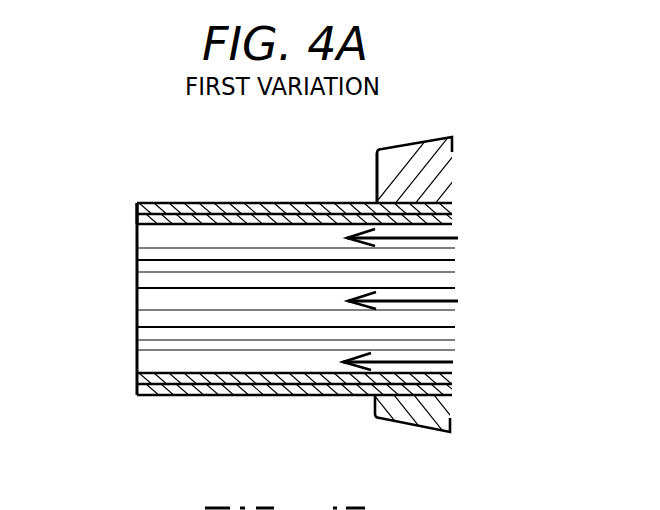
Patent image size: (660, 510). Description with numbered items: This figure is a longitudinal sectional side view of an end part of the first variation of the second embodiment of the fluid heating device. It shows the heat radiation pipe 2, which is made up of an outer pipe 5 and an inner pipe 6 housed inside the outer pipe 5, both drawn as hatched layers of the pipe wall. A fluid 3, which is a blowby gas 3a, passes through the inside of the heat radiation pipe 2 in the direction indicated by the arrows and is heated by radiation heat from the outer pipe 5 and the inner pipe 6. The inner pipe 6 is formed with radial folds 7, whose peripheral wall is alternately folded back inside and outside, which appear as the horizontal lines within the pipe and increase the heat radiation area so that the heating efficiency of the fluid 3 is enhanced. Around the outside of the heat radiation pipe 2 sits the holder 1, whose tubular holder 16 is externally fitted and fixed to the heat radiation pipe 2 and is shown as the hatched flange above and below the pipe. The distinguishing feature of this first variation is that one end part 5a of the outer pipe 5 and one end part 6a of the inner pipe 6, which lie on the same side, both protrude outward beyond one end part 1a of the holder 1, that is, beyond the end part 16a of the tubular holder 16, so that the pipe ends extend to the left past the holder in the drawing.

The holder 1 is at (456, 171).
The end part of holder 1a is at (375, 168).
The heat radiation pipe 2 is at (349, 298).
The fluid 3 is at (458, 238).
The blowby gas 3a is at (468, 299).
The outer pipe 5 is at (456, 210).
The end part of outer pipe 5a is at (137, 203).
The inner pipe 6 is at (456, 222).
The end part of inner pipe 6a is at (137, 222).
The radial folds 7 is at (143, 362).
The tubular holder 16 is at (451, 300).
The end part of tubular holder 16a is at (387, 156).